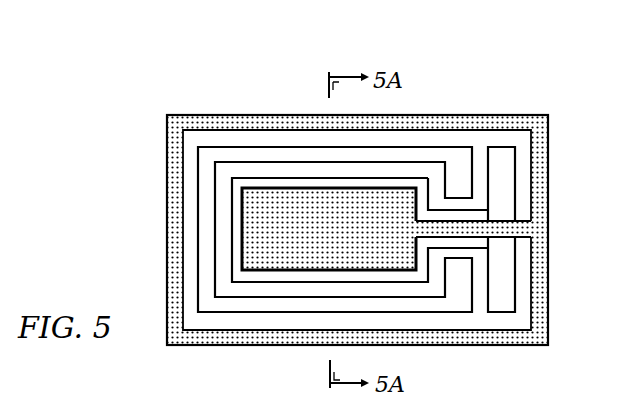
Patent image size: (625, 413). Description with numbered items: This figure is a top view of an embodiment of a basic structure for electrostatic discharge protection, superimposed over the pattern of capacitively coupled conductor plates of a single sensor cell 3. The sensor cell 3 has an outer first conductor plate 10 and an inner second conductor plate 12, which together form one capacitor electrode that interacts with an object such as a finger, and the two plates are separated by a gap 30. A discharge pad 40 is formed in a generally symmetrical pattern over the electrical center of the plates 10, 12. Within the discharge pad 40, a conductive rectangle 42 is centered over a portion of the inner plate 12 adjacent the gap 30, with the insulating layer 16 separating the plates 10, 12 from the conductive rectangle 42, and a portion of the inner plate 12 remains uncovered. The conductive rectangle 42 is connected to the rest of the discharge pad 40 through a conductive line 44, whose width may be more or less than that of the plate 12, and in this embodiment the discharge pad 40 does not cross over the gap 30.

The sensor cell 3 is at (248, 59).
The discharge pad 40 is at (214, 122).
The gap 30 is at (481, 150).
The second conductor plate 12 is at (503, 145).
The conductive line 44 is at (530, 228).
The conductive rectangle 42 is at (346, 244).
The first conductor plate 10 is at (275, 313).
The insulating layer 16 is at (520, 337).